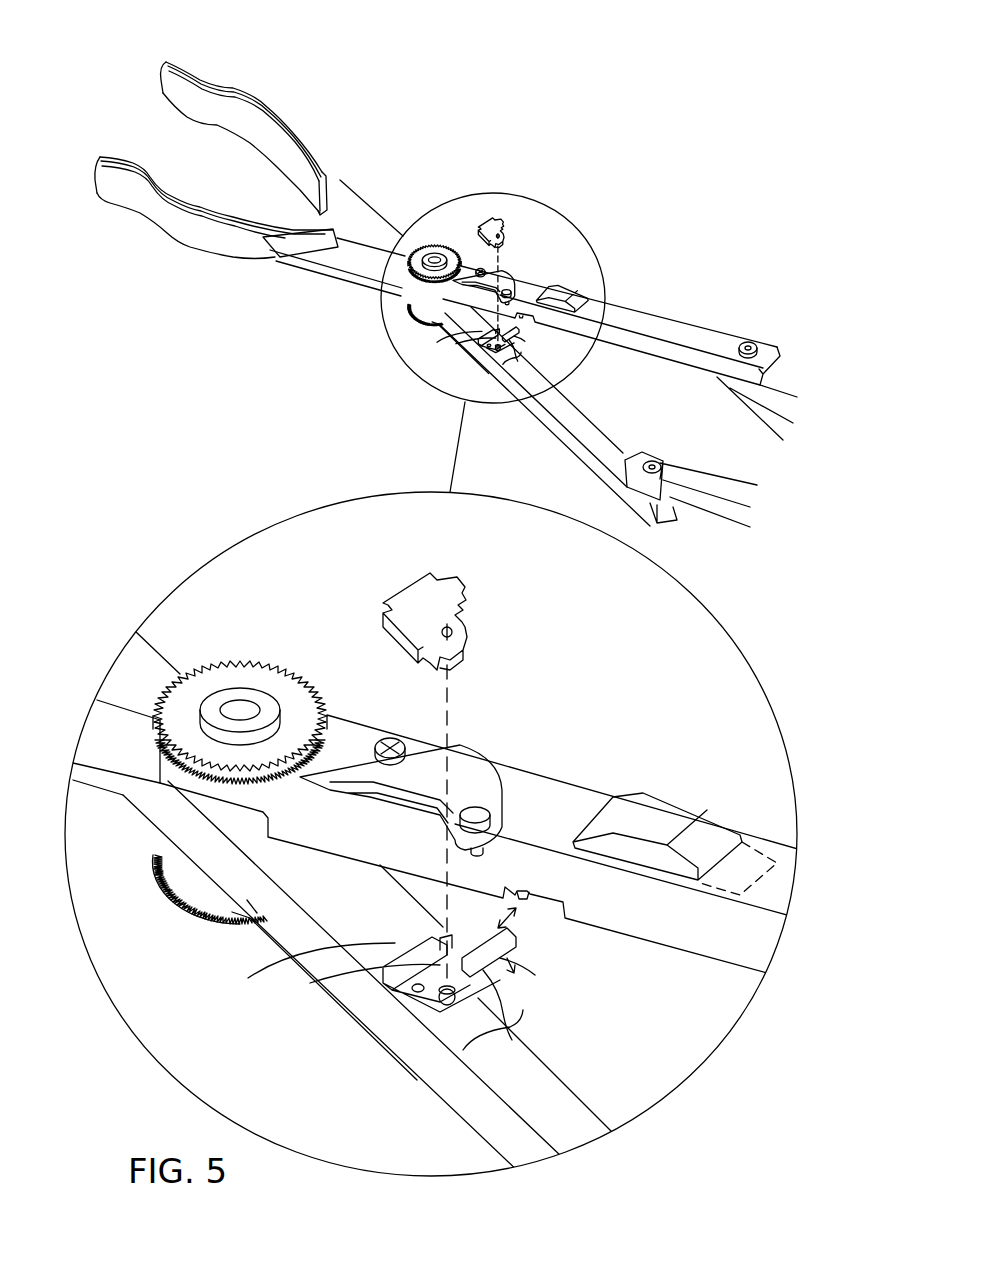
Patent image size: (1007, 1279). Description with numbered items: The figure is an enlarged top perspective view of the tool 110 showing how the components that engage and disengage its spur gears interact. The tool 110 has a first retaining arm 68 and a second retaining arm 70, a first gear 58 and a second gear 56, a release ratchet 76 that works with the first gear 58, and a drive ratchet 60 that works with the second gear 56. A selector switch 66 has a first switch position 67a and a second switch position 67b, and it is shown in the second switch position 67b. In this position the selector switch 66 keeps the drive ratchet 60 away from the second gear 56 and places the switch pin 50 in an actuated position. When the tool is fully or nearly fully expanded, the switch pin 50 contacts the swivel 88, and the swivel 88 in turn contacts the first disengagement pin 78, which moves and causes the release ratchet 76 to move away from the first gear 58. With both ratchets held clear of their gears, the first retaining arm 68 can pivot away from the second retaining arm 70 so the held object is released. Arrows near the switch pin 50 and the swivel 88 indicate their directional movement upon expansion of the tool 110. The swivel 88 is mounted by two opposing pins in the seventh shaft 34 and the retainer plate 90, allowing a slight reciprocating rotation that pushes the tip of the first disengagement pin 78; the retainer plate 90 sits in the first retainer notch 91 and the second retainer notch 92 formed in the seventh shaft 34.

The tool 110 is at (87, 60).
The second retaining arm 70 is at (232, 87).
The first retaining arm 68 is at (133, 217).
The seventh shaft 34 is at (600, 428).
The second gear 56 is at (430, 247).
The first gear 58 is at (405, 305).
The retainer plate 90 is at (492, 222).
The drive ratchet 60 is at (460, 752).
The selector switch 66 is at (670, 794).
The first switch position 67a is at (777, 863).
The second switch position 67b is at (700, 882).
The release ratchet 76 is at (457, 357).
The first disengagement pin 78 is at (310, 983).
The first retainer notch 91 is at (248, 978).
The second retainer notch 92 is at (390, 997).
The swivel 88 is at (505, 935).
The switch pin 50 is at (528, 900).